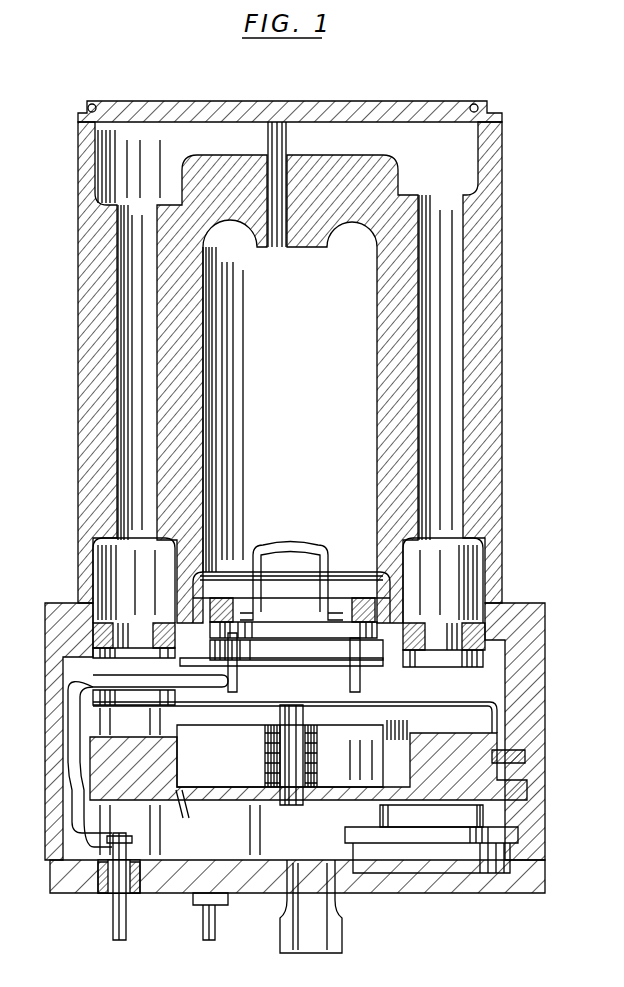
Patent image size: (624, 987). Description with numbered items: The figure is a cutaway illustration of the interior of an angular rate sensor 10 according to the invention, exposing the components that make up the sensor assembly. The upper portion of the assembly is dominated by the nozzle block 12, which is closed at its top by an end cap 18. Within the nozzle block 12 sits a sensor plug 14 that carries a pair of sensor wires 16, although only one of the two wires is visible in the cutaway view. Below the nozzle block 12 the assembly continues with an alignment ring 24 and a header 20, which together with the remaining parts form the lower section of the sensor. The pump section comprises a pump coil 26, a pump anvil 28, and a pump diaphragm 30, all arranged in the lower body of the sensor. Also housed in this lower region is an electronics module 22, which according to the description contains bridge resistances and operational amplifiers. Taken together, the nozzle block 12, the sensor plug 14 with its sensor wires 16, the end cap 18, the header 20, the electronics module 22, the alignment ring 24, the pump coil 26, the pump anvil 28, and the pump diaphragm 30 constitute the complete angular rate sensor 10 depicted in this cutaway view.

The angular rate sensor 10 is at (541, 85).
The nozzle block 12 is at (500, 349).
The sensor plug 14 is at (275, 631).
The sensor wires 16 is at (292, 546).
The end cap 18 is at (300, 104).
The header 20 is at (90, 892).
The electronics module 22 is at (345, 835).
The alignment ring 24 is at (93, 636).
The pump coil 26 is at (240, 764).
The pump anvil 28 is at (158, 800).
The pump diaphragm 30 is at (377, 704).